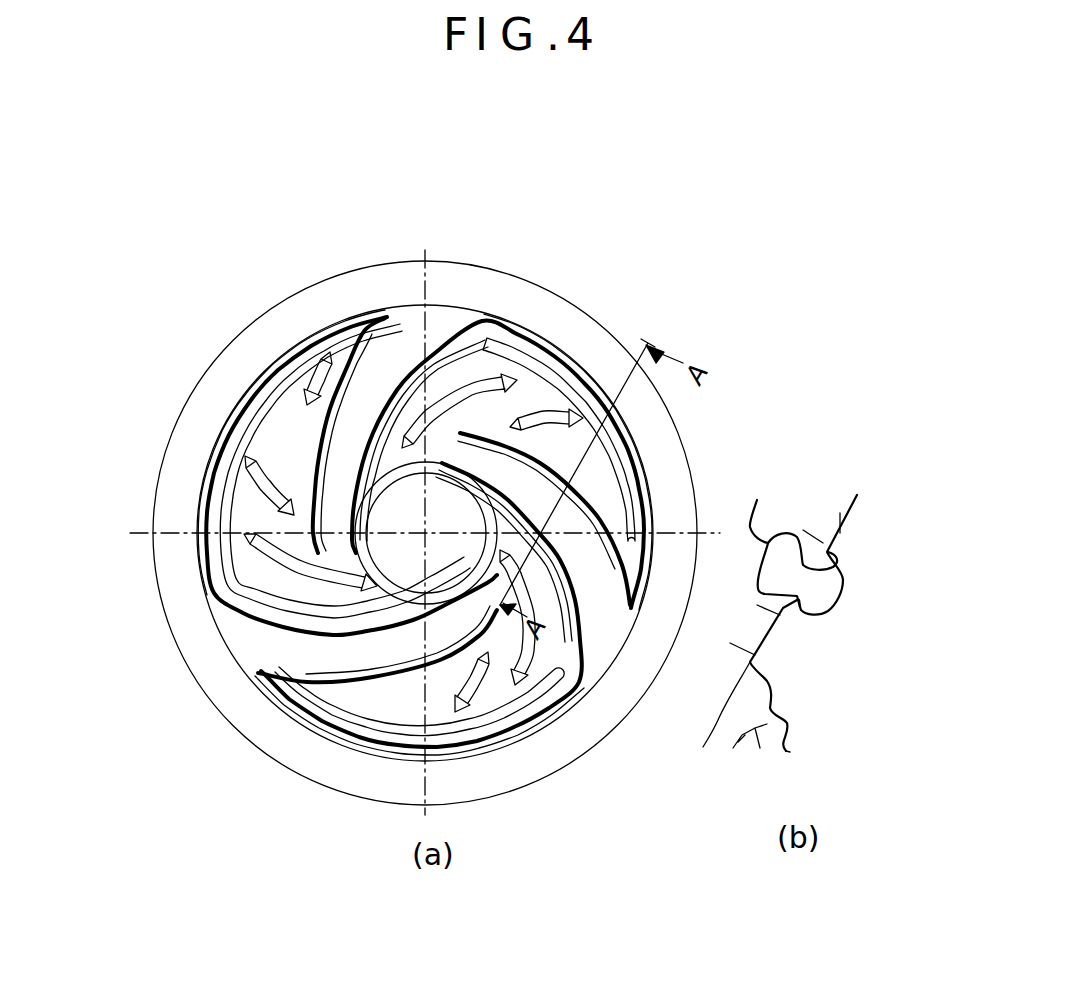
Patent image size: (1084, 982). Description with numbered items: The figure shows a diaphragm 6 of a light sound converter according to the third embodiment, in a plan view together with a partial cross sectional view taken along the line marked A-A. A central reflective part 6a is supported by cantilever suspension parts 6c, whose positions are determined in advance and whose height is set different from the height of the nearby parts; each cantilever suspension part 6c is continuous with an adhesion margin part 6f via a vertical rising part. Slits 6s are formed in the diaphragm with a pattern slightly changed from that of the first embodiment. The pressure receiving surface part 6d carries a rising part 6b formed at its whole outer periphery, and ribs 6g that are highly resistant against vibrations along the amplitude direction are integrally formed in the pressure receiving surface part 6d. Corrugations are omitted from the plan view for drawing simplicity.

The diaphragm 6 is at (190, 390).
The reflective part 6a is at (400, 507).
The rising part 6b is at (700, 752).
The cantilever suspension part 6c is at (352, 306).
The pressure receiving surface part 6d is at (520, 376).
The adhesion margin part 6f is at (652, 436).
The rib 6g is at (518, 700).
The slit 6s is at (466, 328).